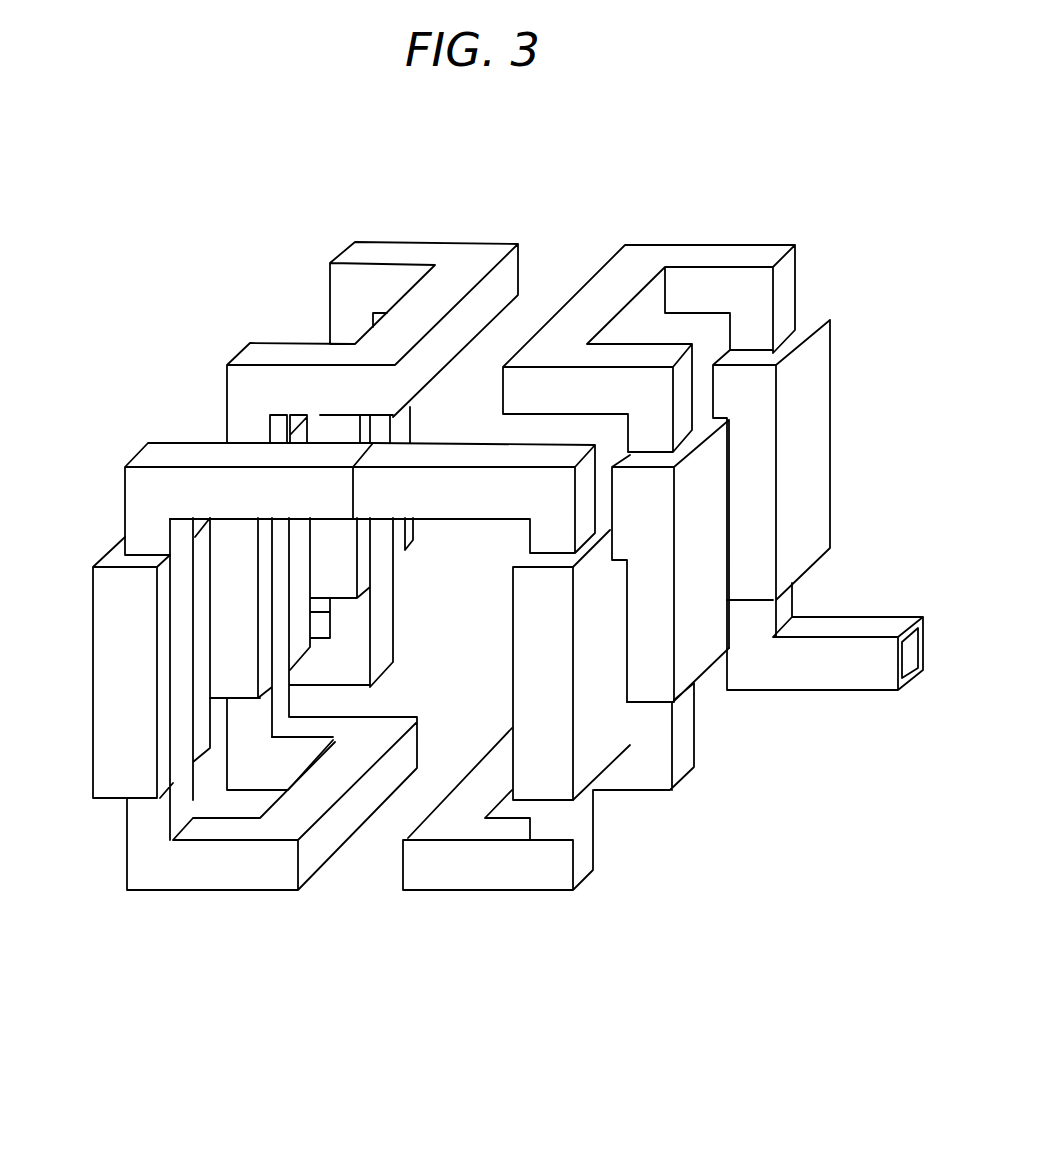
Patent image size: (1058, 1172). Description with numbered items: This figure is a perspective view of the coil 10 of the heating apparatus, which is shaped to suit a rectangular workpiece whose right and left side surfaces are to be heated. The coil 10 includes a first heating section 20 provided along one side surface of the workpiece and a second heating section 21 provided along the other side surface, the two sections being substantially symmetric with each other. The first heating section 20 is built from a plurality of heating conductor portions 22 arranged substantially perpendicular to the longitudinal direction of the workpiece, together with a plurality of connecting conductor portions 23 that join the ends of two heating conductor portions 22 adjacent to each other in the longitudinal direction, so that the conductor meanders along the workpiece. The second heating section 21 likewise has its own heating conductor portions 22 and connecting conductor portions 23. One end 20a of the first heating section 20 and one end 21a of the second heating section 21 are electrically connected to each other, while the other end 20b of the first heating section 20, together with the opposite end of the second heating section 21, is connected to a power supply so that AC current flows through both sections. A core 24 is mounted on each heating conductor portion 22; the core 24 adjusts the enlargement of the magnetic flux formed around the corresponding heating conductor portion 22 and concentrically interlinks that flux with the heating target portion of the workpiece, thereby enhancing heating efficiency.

The coil 10 is at (194, 149).
The first heating section 20 is at (473, 899).
The one end of the first heating section 20a is at (398, 458).
The other end of the first heating section 20b is at (868, 627).
The second heating section 21 is at (205, 899).
The one end of the second heating section 21a is at (322, 460).
The heating conductor portion 22 is at (783, 320).
The connecting conductor portion 23 is at (417, 303).
The core 24 is at (333, 562).